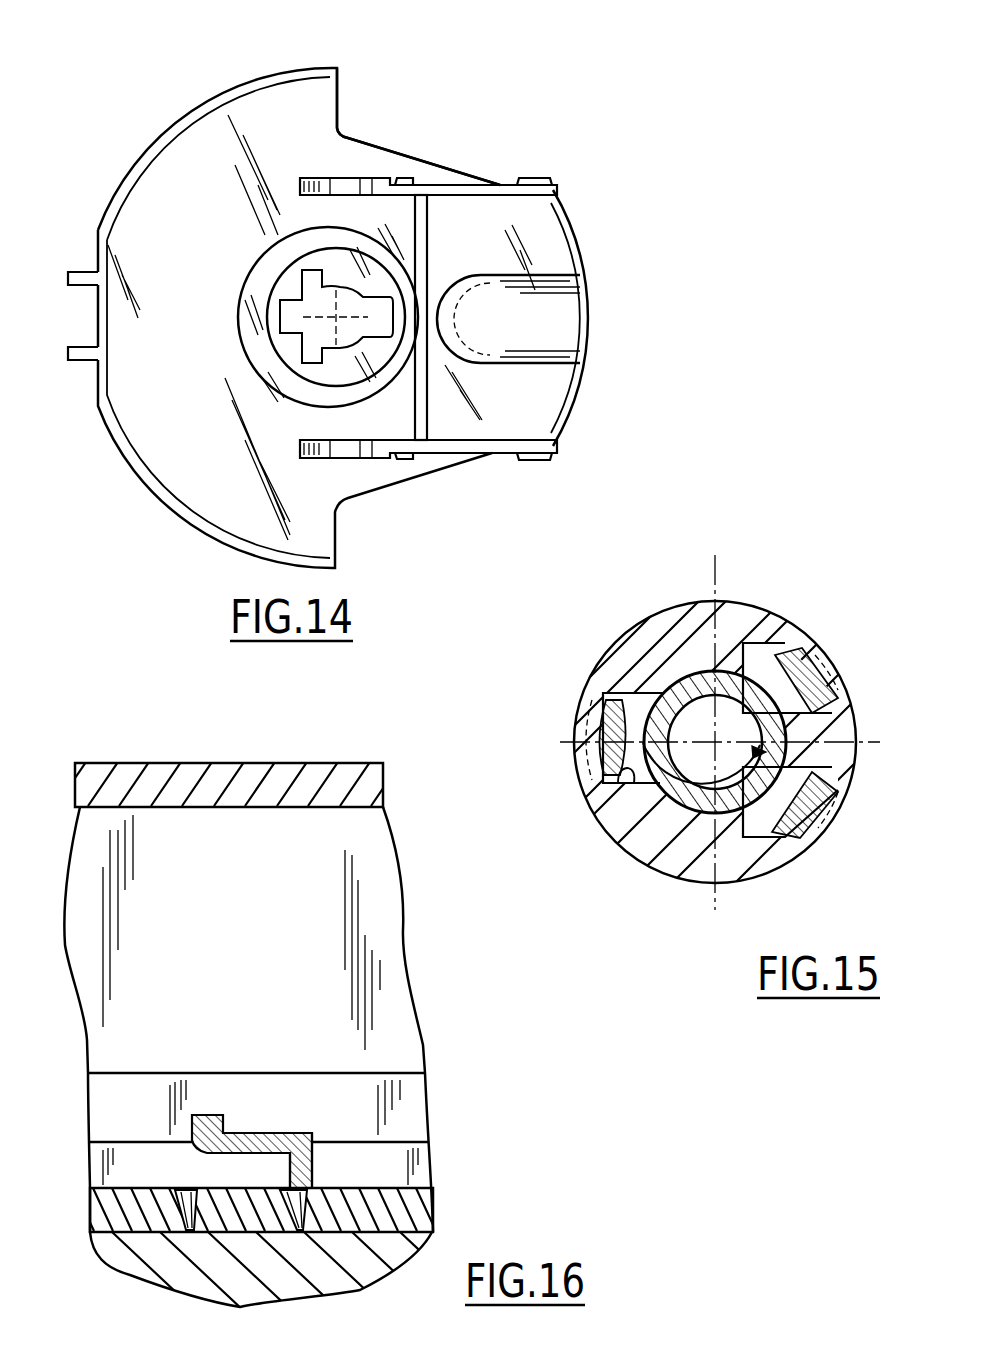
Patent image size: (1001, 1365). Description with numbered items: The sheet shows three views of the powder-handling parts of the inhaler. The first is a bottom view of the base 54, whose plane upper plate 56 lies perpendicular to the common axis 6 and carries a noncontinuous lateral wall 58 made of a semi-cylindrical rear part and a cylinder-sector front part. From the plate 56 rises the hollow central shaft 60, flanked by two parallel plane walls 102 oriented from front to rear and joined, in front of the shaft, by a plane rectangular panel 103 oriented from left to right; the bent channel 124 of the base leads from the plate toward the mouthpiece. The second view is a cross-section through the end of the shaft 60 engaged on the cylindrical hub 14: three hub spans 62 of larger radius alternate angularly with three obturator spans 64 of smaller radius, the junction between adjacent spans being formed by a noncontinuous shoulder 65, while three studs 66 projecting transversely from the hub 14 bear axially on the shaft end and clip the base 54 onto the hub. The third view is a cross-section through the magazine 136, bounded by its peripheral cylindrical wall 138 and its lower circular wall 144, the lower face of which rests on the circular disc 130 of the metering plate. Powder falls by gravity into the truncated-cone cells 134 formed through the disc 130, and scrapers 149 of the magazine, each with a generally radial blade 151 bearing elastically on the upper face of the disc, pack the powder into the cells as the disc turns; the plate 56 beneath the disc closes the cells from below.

In FIG. 14, the base 54 is at (505, 110).
In FIG. 15, the base 54 is at (685, 640).
In FIG. 14, the plane upper plate 56 is at (310, 122).
In FIG. 16, the plane upper plate 56 is at (203, 1273).
In FIG. 14, the noncontinuous lateral wall 58 is at (236, 95).
In FIG. 14, the central shaft 60 is at (268, 267).
In FIG. 15, the central shaft 60 is at (645, 640).
In FIG. 14, the plane walls 102 is at (383, 185).
In FIG. 14, the plane rectangular panel 103 is at (422, 400).
In FIG. 14, the channel 124 is at (540, 318).
In FIG. 15, the cylindrical hub 14 is at (700, 683).
In FIG. 15, the first internal cylindrical bearing spans 62 is at (838, 706).
In FIG. 15, the second internal cylindrical bearing spans 64 is at (818, 675).
In FIG. 15, the noncontinuous shoulder 65 is at (720, 823).
In FIG. 15, the studs 66 is at (785, 650).
In FIG. 15, the axis 6 is at (678, 790).
In FIG. 16, the circular disc 130 is at (110, 1210).
In FIG. 16, the cells 134 is at (175, 1215).
In FIG. 16, the magazine 136 is at (360, 928).
In FIG. 16, the peripheral cylindrical wall 138 is at (243, 884).
In FIG. 16, the lower circular wall 144 is at (250, 783).
In FIG. 16, the scrapers 149 is at (255, 1118).
In FIG. 16, the blade 151 is at (303, 1168).